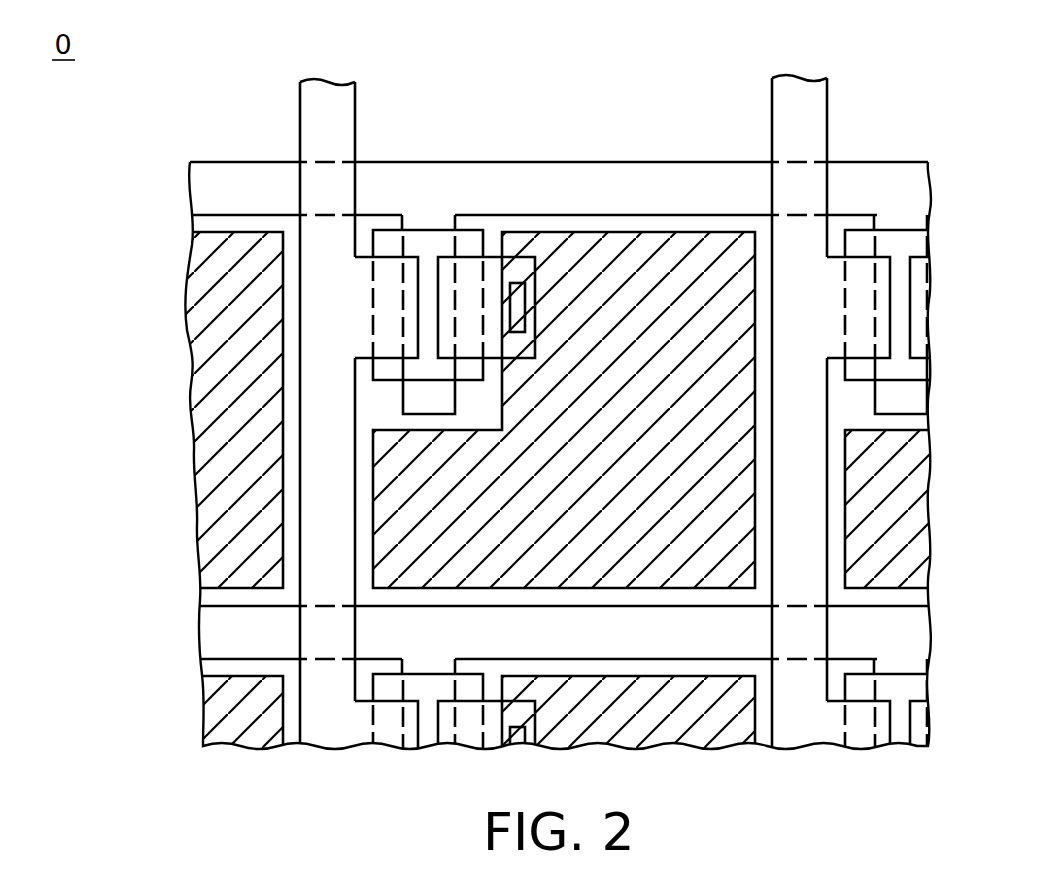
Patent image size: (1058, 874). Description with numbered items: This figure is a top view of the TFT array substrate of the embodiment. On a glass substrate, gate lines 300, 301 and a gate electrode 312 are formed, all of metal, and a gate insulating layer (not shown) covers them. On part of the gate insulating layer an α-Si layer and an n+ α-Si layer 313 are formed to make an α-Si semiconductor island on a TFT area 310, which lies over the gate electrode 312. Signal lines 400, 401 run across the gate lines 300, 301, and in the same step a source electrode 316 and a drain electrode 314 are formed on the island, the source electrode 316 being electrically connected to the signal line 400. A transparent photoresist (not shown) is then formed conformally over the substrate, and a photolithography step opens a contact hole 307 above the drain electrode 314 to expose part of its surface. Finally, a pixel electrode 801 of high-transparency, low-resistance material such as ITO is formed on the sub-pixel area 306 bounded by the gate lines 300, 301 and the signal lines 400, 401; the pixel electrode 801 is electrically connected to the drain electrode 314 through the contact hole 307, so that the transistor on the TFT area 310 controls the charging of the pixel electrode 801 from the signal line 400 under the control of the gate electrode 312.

The gate line 300 is at (204, 186).
The gate line 301 is at (212, 630).
The signal line 400 is at (327, 97).
The signal line 401 is at (801, 95).
The sub-pixel area 306 is at (361, 232).
The contact hole 307 is at (517, 278).
The TFT area 310 is at (426, 420).
The gate electrode 312 is at (428, 389).
The n+ α-Si layer 313 is at (392, 240).
The drain electrode 314 is at (492, 263).
The source electrode 316 is at (372, 318).
The pixel electrode 801 is at (635, 257).